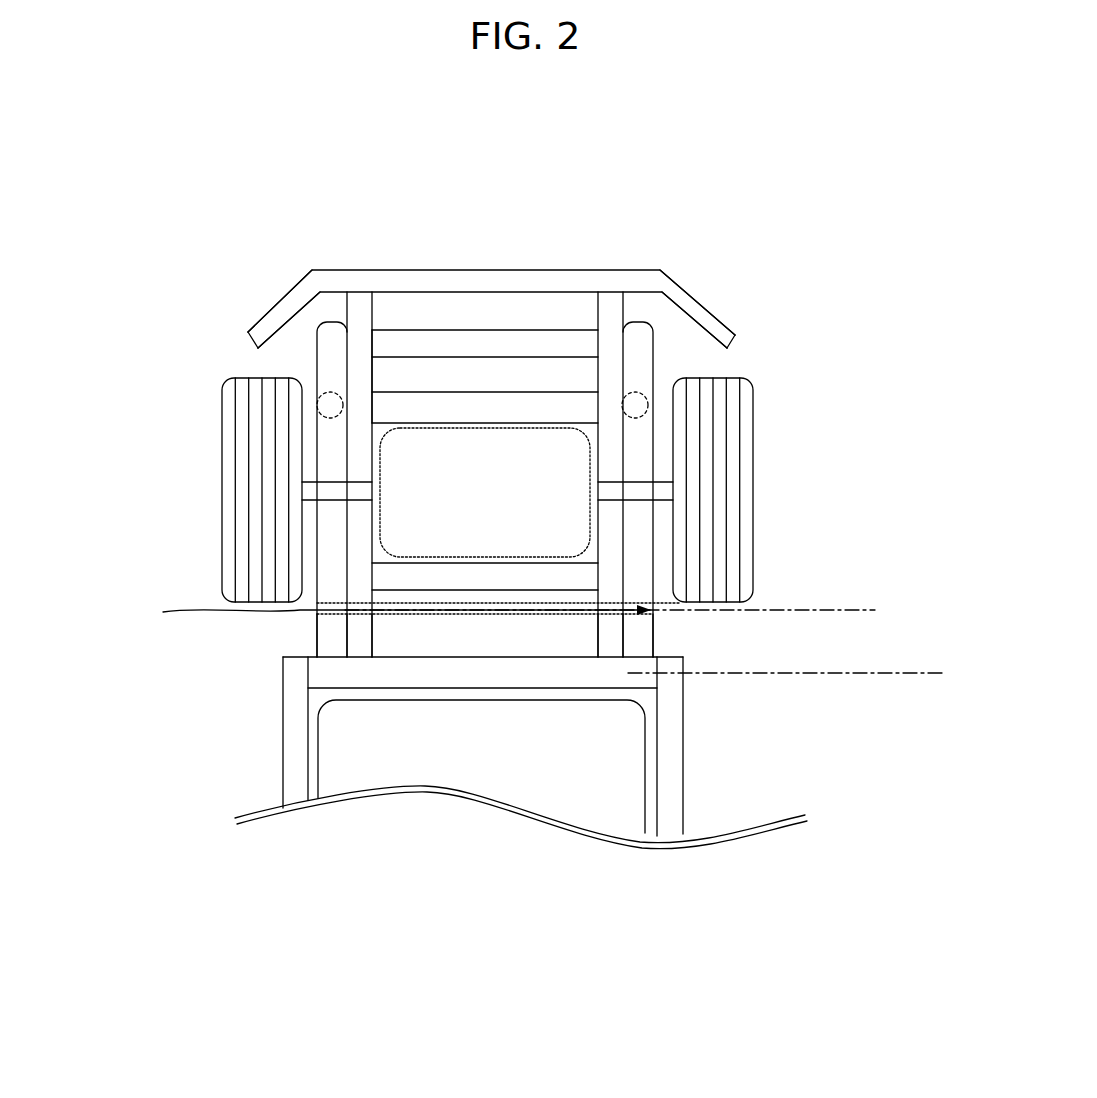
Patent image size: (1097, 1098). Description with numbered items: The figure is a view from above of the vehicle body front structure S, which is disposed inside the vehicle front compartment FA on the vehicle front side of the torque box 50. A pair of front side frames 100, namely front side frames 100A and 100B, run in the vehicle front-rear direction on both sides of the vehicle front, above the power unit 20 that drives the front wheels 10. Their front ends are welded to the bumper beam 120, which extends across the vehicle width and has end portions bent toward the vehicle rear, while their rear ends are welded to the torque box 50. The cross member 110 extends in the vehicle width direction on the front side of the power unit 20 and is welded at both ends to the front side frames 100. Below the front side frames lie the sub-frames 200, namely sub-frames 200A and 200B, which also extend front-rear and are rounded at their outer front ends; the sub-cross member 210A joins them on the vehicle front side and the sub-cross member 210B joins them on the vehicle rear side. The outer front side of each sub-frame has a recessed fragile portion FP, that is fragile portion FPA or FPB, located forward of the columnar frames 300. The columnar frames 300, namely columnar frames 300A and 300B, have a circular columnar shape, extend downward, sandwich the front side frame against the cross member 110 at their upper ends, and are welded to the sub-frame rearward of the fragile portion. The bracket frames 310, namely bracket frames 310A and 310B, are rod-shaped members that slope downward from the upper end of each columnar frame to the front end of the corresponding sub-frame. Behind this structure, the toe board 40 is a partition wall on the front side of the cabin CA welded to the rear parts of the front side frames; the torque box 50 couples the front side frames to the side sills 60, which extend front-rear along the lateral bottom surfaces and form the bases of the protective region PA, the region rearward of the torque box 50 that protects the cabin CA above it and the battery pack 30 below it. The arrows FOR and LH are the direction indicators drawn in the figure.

The front wheels 10 is at (240, 420).
The power unit 20 is at (428, 467).
The battery pack 30 is at (441, 760).
The toe board 40 is at (383, 613).
The torque box 50 is at (512, 682).
The side sills 60 is at (293, 770).
The front side frames 100 is at (473, 640).
The front side frame 100A is at (612, 645).
The front side frame 100B is at (355, 630).
The cross member 110 is at (415, 405).
The bumper beam 120 is at (493, 277).
The sub-frames 200 is at (501, 489).
The sub-frame 200A is at (638, 533).
The sub-frame 200B is at (333, 532).
The sub-cross member 210A is at (533, 342).
The sub-cross member 210B is at (428, 580).
The columnar frames 300 is at (510, 368).
The columnar frame 300A is at (650, 405).
The columnar frame 300B is at (318, 400).
The bracket frames 310 is at (494, 301).
The bracket frame 310A is at (637, 340).
The bracket frame 310B is at (335, 343).
The fragile portion FP is at (484, 331).
The fragile portion FPA is at (668, 378).
The fragile portion FPB is at (300, 380).
The vehicle front compartment FA is at (932, 673).
The cabin CA is at (843, 612).
The protective region PA is at (932, 673).
The vehicle body front structure S is at (916, 163).
The forward direction FOR is at (96, 928).
The left-hand direction LH is at (96, 928).